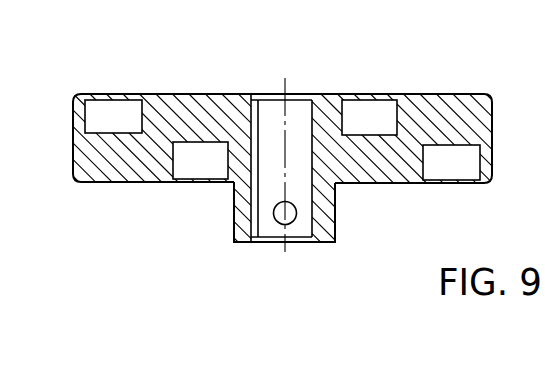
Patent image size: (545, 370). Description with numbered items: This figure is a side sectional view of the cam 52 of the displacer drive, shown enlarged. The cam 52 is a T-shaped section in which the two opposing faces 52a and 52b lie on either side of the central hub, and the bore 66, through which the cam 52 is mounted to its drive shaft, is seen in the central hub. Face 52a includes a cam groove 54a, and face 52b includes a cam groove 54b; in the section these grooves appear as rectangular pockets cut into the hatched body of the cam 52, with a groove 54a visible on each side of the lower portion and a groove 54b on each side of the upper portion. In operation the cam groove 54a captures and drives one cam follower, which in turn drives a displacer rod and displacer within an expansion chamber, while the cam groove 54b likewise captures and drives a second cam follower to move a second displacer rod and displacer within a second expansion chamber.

The cam 52 is at (272, 126).
The face 52a is at (110, 183).
The face 52b is at (445, 95).
The cam groove 54a is at (173, 167).
The cam groove 54b is at (87, 113).
The bore 66 is at (272, 222).